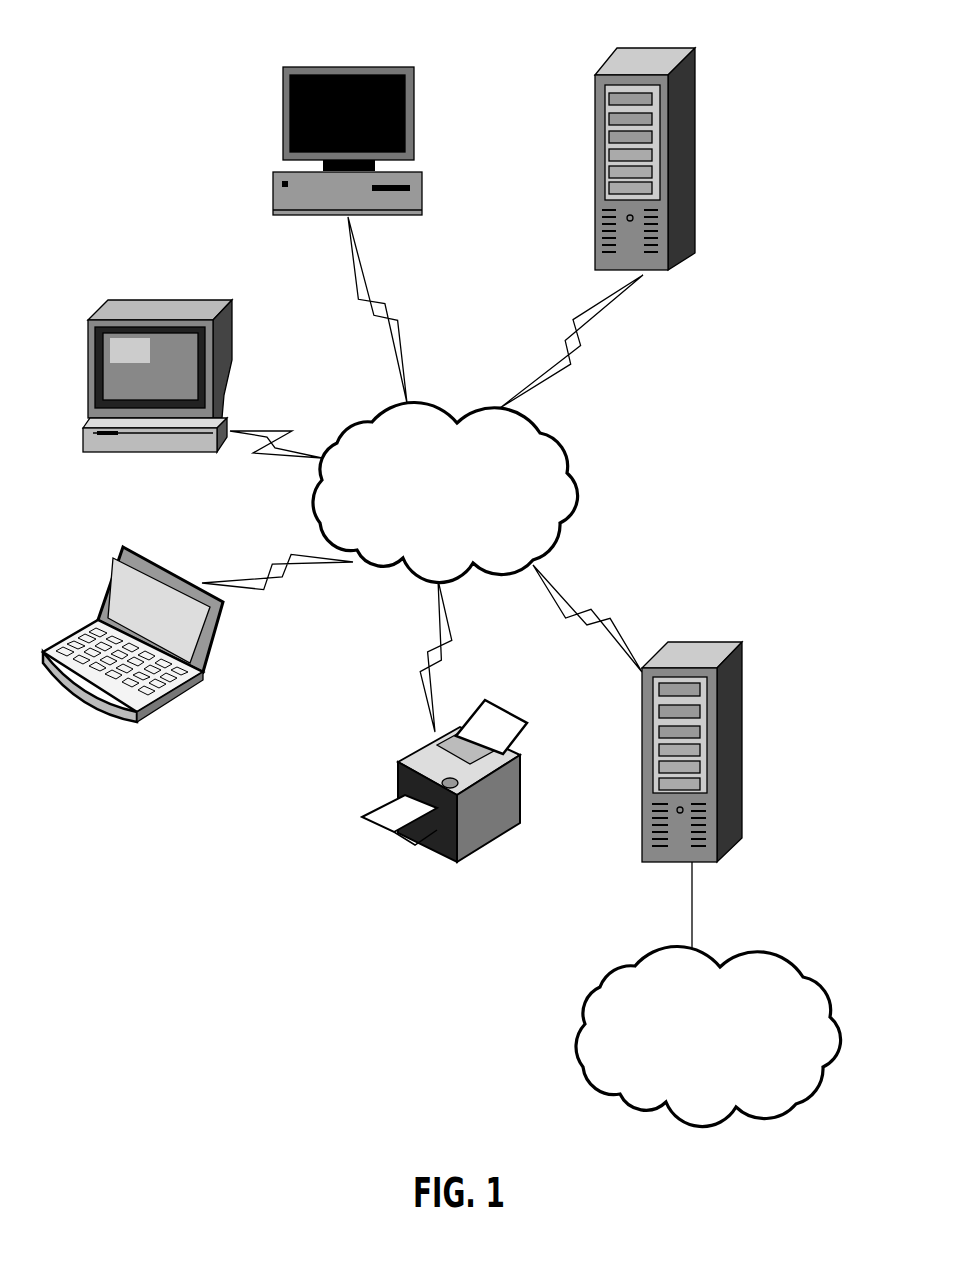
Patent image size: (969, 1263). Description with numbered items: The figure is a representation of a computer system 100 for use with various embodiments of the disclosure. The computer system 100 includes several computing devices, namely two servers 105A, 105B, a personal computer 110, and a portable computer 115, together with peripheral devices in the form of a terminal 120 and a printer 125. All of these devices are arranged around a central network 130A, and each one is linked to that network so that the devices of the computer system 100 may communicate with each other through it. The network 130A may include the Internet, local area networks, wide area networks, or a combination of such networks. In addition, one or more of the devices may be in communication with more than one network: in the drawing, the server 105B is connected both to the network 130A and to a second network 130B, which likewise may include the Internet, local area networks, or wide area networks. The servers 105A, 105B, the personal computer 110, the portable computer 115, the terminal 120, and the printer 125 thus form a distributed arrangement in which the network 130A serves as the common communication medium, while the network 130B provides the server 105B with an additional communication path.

The computer system 100 is at (668, 511).
The server 105A is at (595, 157).
The server 105B is at (692, 655).
The personal computer 110 is at (347, 67).
The portable computer 115 is at (90, 707).
The terminal 120 is at (163, 307).
The printer 125 is at (458, 867).
The network 130A is at (420, 581).
The network 130B is at (585, 992).